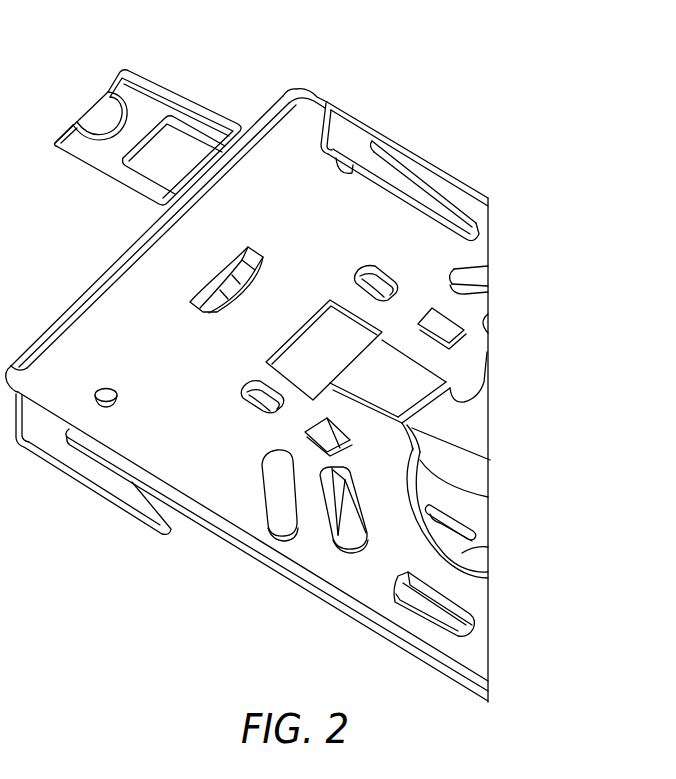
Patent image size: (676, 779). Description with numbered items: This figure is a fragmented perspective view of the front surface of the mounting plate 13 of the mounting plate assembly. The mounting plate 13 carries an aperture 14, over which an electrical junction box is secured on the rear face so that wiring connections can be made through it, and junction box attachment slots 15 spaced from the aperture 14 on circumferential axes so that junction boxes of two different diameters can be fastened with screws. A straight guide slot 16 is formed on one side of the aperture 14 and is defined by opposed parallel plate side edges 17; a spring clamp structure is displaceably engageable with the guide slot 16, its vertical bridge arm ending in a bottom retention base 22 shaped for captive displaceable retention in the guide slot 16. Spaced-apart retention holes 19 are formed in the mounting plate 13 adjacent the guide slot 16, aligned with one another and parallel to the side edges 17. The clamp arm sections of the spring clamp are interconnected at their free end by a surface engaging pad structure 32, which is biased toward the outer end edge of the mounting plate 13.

The mounting plate 13 is at (133, 290).
The aperture 14 is at (462, 553).
The junction box attachment slots 15 is at (333, 538).
The guide slot 16 is at (449, 379).
The plate side edges 17 is at (415, 428).
The retention holes 19 is at (250, 372).
The retention base 22 is at (342, 336).
The surface engaging pad structure 32 is at (147, 112).